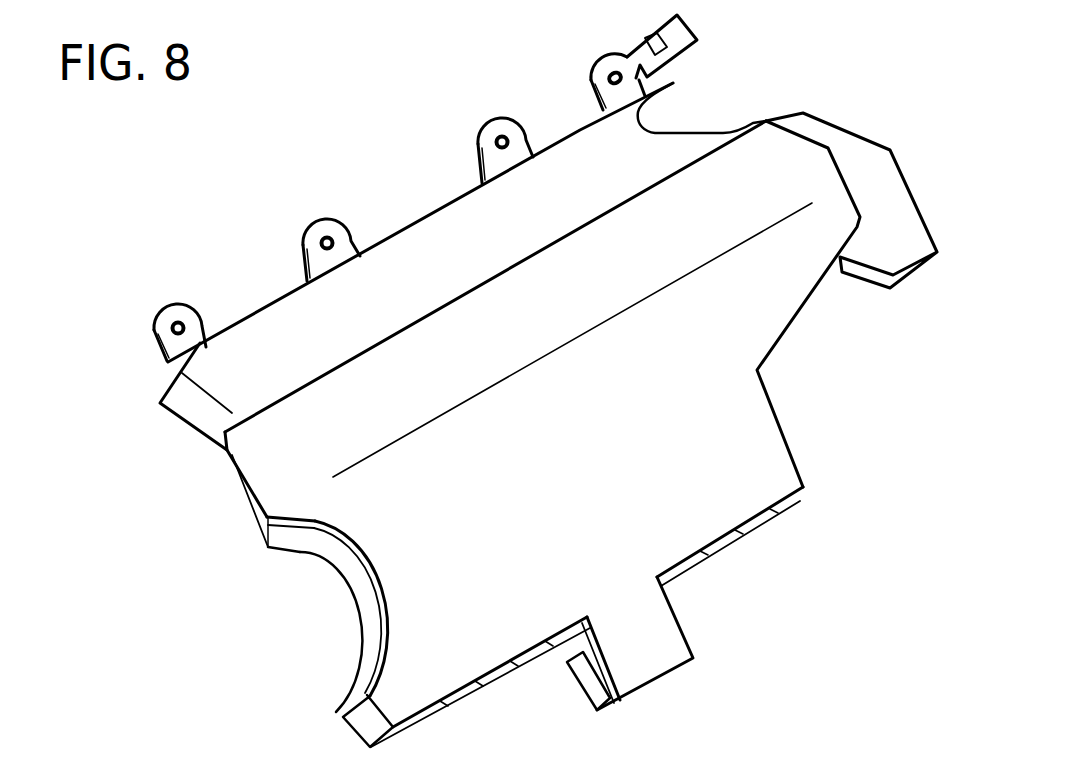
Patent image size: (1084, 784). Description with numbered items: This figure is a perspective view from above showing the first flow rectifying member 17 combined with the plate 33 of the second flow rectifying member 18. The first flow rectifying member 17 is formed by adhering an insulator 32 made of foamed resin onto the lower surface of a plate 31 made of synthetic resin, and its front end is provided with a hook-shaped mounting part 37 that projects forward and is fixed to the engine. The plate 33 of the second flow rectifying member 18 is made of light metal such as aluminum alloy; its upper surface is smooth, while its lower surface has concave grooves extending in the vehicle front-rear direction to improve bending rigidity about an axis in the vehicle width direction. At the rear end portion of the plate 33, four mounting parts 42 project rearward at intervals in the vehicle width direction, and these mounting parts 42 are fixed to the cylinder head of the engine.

The first flow rectifying member 17 is at (785, 427).
The second flow rectifying member 18 is at (184, 428).
The plate 31 is at (333, 537).
The insulator 32 is at (353, 593).
The plate 33 is at (435, 243).
The mounting part 37 is at (667, 678).
The mounting parts 42 is at (170, 303).